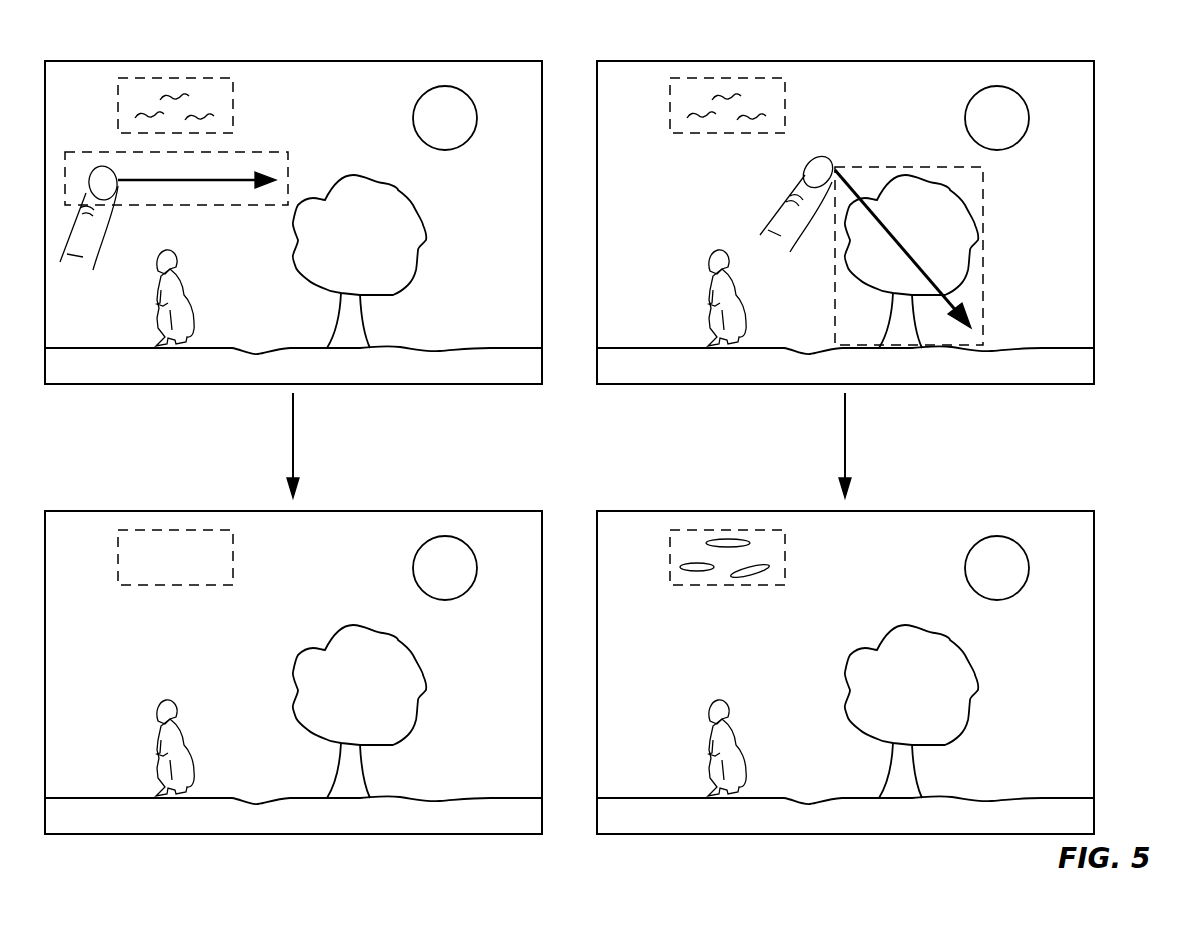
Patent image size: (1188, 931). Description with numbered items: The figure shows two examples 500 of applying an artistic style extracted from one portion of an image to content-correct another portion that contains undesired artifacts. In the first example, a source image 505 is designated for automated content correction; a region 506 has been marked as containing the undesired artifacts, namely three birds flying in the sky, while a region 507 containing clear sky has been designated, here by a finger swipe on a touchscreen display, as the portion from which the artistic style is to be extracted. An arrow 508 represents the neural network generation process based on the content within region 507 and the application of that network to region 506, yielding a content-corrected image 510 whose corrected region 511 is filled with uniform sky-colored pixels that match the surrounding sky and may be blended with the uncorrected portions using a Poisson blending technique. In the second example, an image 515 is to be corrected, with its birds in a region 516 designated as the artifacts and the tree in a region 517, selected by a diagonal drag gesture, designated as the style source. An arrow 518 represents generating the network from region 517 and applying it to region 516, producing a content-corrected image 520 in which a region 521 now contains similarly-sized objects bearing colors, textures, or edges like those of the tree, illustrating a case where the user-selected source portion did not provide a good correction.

The examples 500 is at (1134, 114).
The source image 505 is at (88, 60).
The region 506 is at (233, 112).
The region 507 is at (288, 167).
The arrow 508 is at (295, 448).
The content-corrected image 510 is at (88, 510).
The region 511 is at (233, 562).
The image 515 is at (640, 60).
The region 516 is at (785, 112).
The region 517 is at (983, 205).
The arrow 518 is at (847, 448).
The content-corrected image 520 is at (640, 510).
The region 521 is at (785, 562).